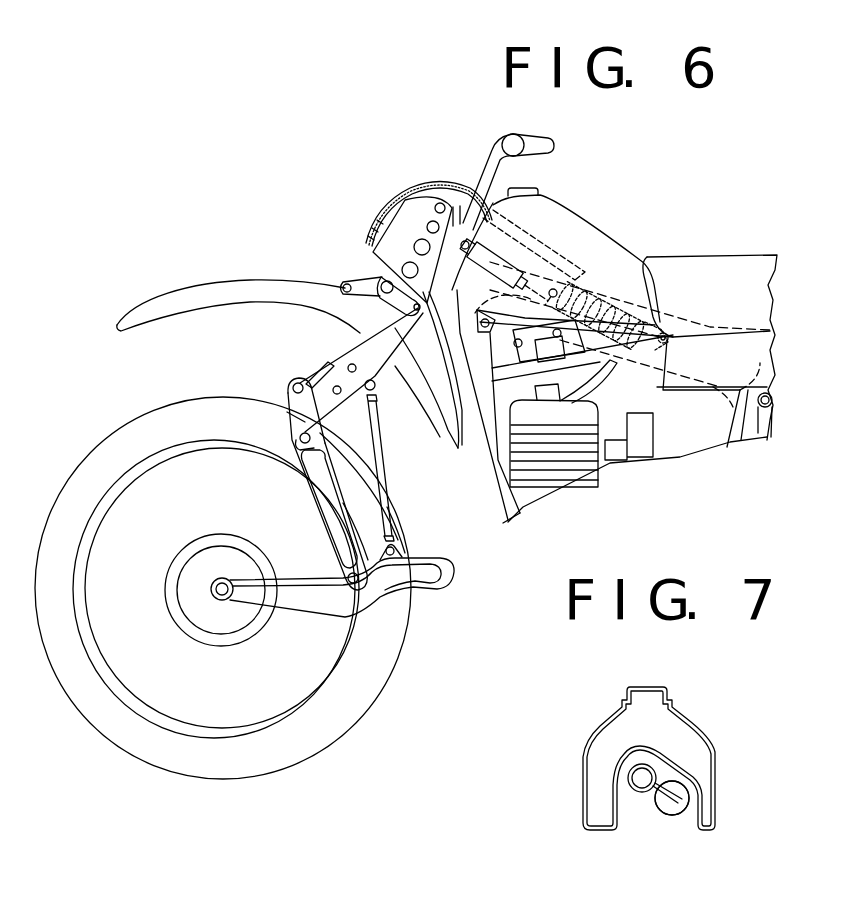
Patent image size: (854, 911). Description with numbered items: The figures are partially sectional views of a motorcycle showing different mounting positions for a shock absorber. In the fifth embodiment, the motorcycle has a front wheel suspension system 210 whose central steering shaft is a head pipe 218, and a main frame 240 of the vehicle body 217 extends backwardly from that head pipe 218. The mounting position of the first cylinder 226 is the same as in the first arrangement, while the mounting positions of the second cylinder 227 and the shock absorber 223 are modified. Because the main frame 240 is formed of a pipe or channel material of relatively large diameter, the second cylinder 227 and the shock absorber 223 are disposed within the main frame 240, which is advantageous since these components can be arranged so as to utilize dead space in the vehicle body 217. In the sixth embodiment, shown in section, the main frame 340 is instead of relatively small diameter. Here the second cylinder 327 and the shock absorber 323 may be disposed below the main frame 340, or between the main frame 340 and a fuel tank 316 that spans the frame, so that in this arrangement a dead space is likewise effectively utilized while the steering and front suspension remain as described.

In FIG. 6, the front wheel suspension system 210 is at (333, 337).
In FIG. 6, the vehicle body 217 is at (510, 516).
In FIG. 6, the head pipe 218 is at (455, 225).
In FIG. 6, the shock absorber 223 is at (613, 307).
In FIG. 6, the first cylinder 226 is at (398, 237).
In FIG. 6, the second cylinder 227 is at (517, 240).
In FIG. 6, the main frame 240 is at (583, 280).
In FIG. 7, the fuel tank 316 is at (680, 717).
In FIG. 7, the main frame 340 is at (640, 796).
In FIG. 7, the second cylinder 327 is at (674, 816).
In FIG. 7, the shock absorber 323 is at (714, 840).